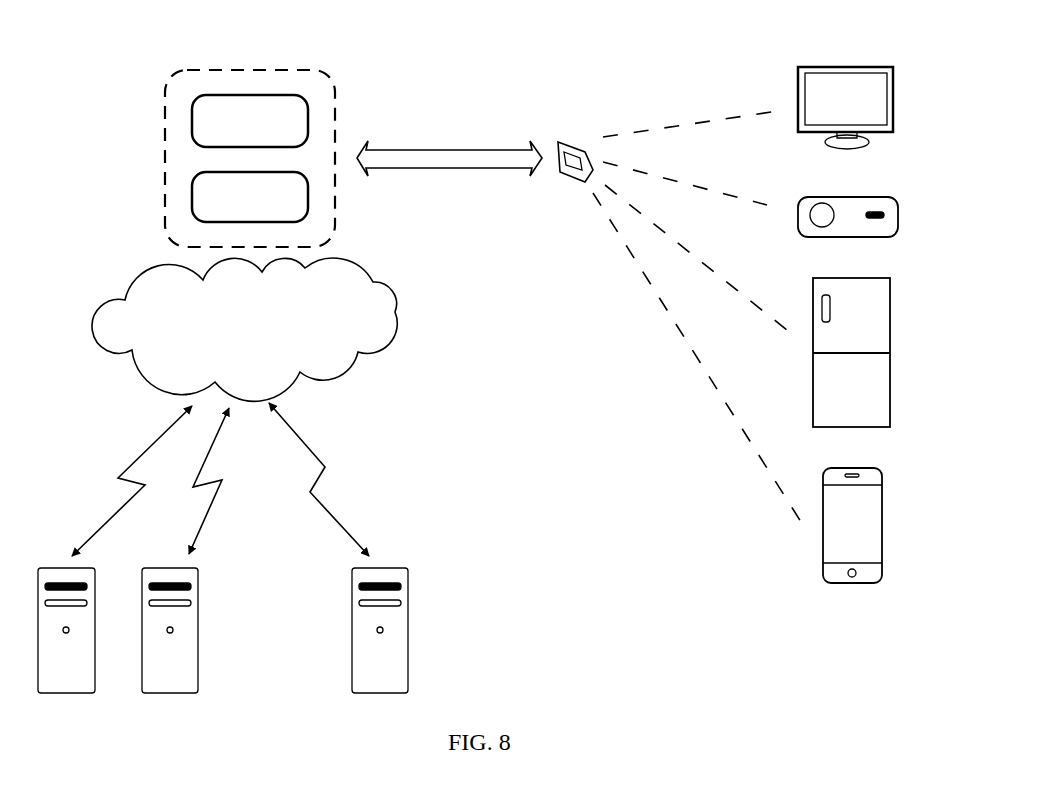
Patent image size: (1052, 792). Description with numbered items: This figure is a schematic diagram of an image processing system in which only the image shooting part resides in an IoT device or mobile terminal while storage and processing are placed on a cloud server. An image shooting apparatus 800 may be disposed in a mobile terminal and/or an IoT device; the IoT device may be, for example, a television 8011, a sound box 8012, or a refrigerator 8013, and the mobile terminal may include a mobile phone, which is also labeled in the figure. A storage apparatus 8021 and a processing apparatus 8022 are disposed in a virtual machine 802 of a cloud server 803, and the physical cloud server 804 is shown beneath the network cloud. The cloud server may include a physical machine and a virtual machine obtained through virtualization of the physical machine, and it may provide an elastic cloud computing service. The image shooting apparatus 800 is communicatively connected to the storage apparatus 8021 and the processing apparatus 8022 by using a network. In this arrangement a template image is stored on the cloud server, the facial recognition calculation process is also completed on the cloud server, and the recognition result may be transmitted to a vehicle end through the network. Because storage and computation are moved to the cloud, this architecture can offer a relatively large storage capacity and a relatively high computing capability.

The image shooting apparatus 800 is at (575, 145).
The virtual machine 802 is at (283, 66).
The storage apparatus 8021 is at (306, 118).
The processing apparatus 8022 is at (308, 212).
The cloud server 803 is at (387, 287).
The cloud server 804 is at (93, 587).
The television 8011 is at (892, 105).
The sound box 8012 is at (900, 213).
The refrigerator 8013 is at (890, 328).